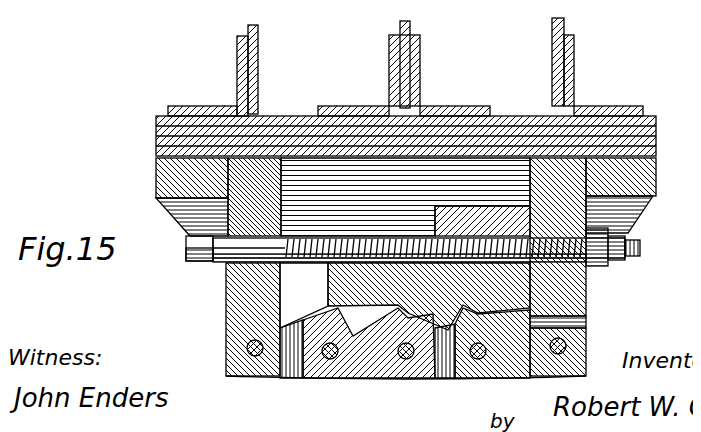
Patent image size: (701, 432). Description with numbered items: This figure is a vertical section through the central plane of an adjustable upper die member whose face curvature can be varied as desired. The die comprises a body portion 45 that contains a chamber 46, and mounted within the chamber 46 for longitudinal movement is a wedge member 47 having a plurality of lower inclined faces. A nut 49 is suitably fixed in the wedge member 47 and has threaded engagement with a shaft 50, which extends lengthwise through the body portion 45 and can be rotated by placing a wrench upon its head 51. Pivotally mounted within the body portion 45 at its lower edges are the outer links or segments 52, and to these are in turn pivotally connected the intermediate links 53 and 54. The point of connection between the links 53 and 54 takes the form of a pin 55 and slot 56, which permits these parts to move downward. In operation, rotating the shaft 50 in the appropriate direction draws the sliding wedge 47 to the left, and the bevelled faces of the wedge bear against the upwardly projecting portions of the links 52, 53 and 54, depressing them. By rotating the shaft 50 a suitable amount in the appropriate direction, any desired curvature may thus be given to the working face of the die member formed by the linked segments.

The body portion 45 is at (560, 281).
The chamber 46 is at (405, 197).
The wedge member 47 is at (320, 282).
The nut 49 is at (427, 226).
The shaft 50 is at (210, 256).
The head 51 is at (180, 230).
The outer links or segments 52 is at (286, 372).
The intermediate link 53 is at (340, 373).
The intermediate link 54 is at (448, 373).
The pin 55 is at (368, 373).
The slot 56 is at (408, 375).